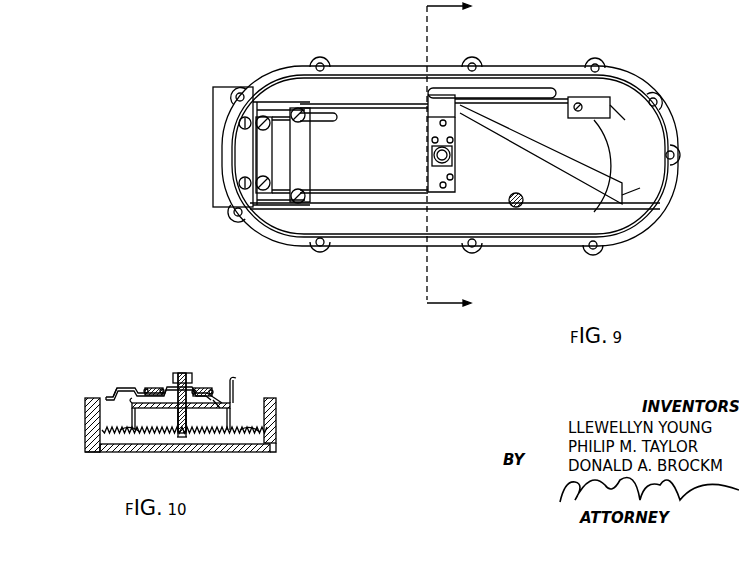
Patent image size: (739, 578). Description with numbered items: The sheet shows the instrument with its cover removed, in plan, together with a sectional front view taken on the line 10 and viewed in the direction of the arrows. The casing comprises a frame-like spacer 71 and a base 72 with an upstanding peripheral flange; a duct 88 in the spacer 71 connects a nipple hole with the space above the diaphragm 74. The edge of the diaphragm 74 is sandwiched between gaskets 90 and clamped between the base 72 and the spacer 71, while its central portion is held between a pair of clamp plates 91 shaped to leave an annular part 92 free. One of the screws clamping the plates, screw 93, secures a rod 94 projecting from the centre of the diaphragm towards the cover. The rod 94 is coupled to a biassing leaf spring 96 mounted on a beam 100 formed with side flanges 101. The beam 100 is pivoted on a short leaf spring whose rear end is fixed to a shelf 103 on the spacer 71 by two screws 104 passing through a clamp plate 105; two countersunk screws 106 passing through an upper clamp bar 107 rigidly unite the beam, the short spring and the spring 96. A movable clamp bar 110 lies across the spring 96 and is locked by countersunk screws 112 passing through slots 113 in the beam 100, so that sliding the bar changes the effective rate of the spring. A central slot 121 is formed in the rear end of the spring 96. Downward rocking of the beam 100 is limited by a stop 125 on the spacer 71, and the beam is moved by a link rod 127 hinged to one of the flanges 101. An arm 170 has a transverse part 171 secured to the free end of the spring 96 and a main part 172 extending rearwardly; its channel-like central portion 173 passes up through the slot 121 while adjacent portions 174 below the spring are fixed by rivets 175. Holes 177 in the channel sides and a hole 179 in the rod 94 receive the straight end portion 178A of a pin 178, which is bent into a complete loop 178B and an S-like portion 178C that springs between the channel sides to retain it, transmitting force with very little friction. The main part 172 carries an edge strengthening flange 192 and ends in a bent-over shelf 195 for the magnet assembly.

In FIG. 9, the section line 10 is at (460, 157).
In FIG. 9, the spacer 71 is at (530, 68).
In FIG. 10, the spacer 71 is at (277, 405).
In FIG. 10, the base 72 is at (230, 452).
In FIG. 10, the diaphragm 74 is at (85, 437).
In FIG. 9, the duct 88 is at (672, 117).
In FIG. 10, the gaskets 90 is at (280, 430).
In FIG. 10, the clamp plates 91 is at (138, 436).
In FIG. 10, the annular part of the diaphragm 92 is at (255, 438).
In FIG. 10, the screw 93 is at (182, 442).
In FIG. 10, the rod 94 is at (175, 416).
In FIG. 9, the biassing leaf spring 96 is at (374, 160).
In FIG. 10, the biassing leaf spring 96 is at (216, 380).
In FIG. 9, the beam 100 is at (438, 200).
In FIG. 10, the beam 100 is at (133, 432).
In FIG. 9, the upstanding flanges 101 is at (565, 148).
In FIG. 10, the upstanding flanges 101 is at (236, 380).
In FIG. 9, the shelf 103 is at (252, 228).
In FIG. 9, the screws 104 is at (232, 178).
In FIG. 9, the clamp plate 105 is at (234, 138).
In FIG. 9, the countersunk screws 106 is at (263, 116).
In FIG. 9, the upper clamp bar 107 is at (280, 196).
In FIG. 9, the movable clamp bar 110 is at (297, 108).
In FIG. 9, the countersunk screws 112 is at (300, 140).
In FIG. 9, the slots 113 is at (330, 121).
In FIG. 9, the central slot 121 is at (440, 124).
In FIG. 9, the stop 125 is at (628, 195).
In FIG. 9, the link rod 127 is at (522, 196).
In FIG. 9, the arm 170 is at (530, 122).
In FIG. 10, the arm 170 is at (122, 387).
In FIG. 10, the transverse part 171 is at (226, 402).
In FIG. 9, the main part 172 is at (540, 100).
In FIG. 10, the main part 172 is at (115, 388).
In FIG. 10, the channel-like central portion 173 is at (175, 372).
In FIG. 10, the adjacent portions 174 is at (190, 396).
In FIG. 9, the rivets 175 is at (454, 142).
In FIG. 10, the rivets 175 is at (153, 387).
In FIG. 10, the holes 177 is at (203, 386).
In FIG. 9, the pin 178 is at (432, 155).
In FIG. 9, the straight end portion 178A is at (454, 136).
In FIG. 9, the loop 178B is at (456, 183).
In FIG. 9, the S-like portion 178C is at (430, 168).
In FIG. 10, the hole 179 is at (184, 372).
In FIG. 9, the edge strengthening flange 192 is at (492, 88).
In FIG. 10, the edge strengthening flange 192 is at (106, 395).
In FIG. 9, the shelf 195 is at (612, 118).